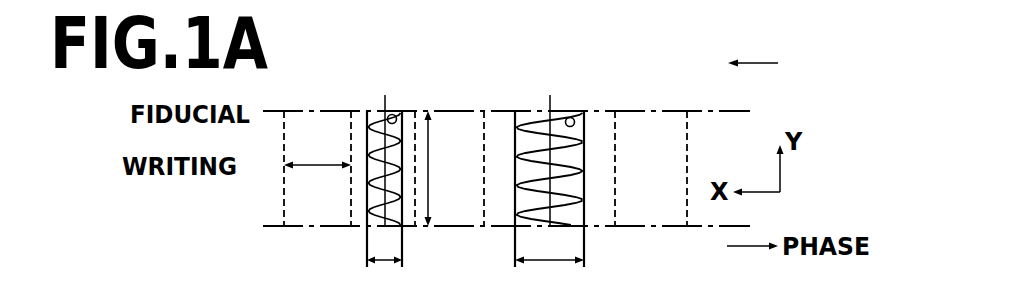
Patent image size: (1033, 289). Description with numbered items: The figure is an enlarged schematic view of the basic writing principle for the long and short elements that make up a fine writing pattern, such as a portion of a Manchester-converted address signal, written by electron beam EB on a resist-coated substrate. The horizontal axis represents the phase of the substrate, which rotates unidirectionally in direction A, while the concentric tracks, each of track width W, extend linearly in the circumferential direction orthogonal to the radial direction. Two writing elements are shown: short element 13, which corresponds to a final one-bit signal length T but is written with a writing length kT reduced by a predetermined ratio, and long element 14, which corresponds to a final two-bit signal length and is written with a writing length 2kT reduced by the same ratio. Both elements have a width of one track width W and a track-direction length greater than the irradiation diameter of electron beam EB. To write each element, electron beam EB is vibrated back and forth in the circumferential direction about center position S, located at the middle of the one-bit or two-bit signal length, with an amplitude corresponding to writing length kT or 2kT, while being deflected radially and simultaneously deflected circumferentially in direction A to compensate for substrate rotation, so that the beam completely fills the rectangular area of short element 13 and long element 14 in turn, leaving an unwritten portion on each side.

The short element 13 is at (375, 110).
The long element 14 is at (530, 110).
The center position S is at (468, 148).
The electron beam EB is at (394, 114).
The 1-bit signal length T is at (317, 180).
The track width W is at (444, 168).
The writing length of short element kT is at (384, 273).
The writing length of long element 2kT is at (549, 273).
The rotation direction A is at (753, 50).